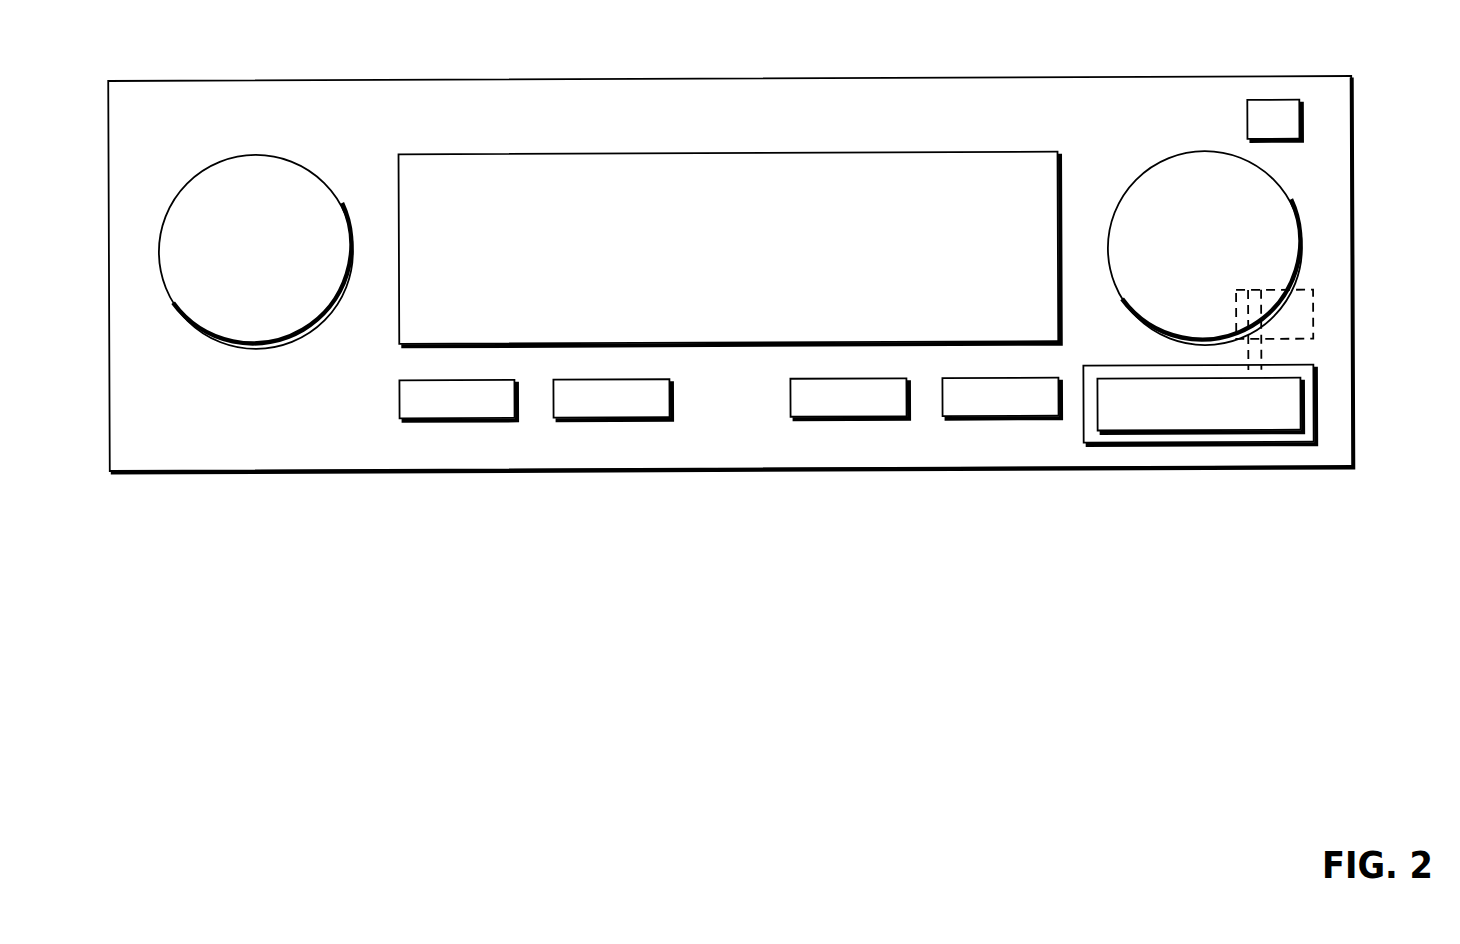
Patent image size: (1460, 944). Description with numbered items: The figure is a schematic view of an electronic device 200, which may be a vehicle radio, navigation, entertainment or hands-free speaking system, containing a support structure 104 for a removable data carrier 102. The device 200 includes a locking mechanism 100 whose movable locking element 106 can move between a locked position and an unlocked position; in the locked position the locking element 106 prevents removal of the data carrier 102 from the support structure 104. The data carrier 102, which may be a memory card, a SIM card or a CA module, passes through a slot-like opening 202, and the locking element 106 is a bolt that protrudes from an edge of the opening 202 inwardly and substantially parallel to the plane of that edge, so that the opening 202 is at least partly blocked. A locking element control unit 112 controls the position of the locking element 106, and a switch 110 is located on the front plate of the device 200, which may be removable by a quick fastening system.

The electronic device 200 is at (131, 78).
The locking mechanism 100 is at (1322, 260).
The switch 110 is at (1302, 113).
The locking element control unit 112 is at (1313, 297).
The locking element 106 is at (1250, 350).
The opening 202 is at (1091, 432).
The removable data carrier 102 is at (1293, 430).
The support structure 104 is at (1313, 398).